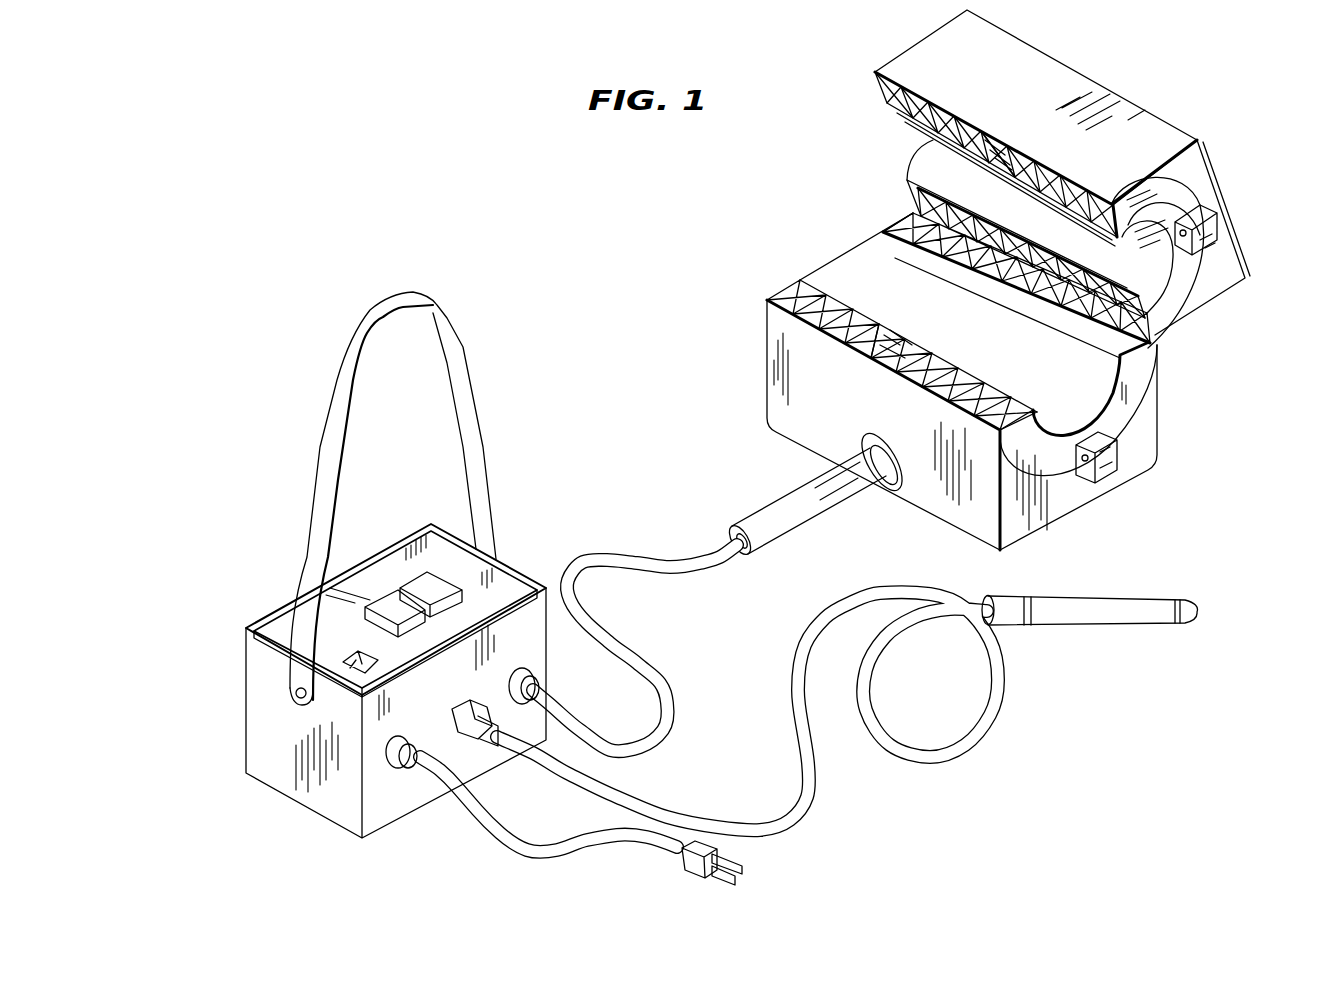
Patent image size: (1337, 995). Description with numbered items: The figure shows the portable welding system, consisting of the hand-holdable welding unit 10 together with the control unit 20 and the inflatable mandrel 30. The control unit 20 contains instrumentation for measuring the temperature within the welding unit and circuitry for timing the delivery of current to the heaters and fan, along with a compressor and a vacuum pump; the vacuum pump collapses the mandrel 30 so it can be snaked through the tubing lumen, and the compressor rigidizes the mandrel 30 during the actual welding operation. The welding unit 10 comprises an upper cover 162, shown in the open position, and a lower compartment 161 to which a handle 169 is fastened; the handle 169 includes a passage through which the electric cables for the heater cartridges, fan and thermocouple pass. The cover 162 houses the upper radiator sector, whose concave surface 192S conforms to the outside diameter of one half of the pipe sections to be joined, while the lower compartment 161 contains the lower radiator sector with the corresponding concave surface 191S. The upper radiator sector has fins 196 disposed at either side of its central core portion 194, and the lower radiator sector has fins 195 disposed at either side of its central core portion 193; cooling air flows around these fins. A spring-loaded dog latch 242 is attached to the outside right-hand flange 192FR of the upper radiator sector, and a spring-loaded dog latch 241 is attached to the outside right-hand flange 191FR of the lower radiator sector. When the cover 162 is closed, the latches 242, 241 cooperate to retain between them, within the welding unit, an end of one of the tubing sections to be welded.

The hand-holdable welding unit 10 is at (1158, 380).
The control unit 20 is at (245, 680).
The inflatable mandrel 30 is at (1103, 623).
The lower compartment 161 is at (768, 352).
The upper cover 162 is at (1100, 83).
The handle 169 is at (777, 513).
The concave surface of lower radiator sector 191S is at (862, 290).
The concave surface of upper radiator sector 192S is at (1215, 295).
The outside right-hand flange of lower radiator sector 191FR is at (1127, 421).
The outside right-hand flange of upper radiator sector 192FR is at (1172, 192).
The central core portion of lower radiator sector 193 is at (878, 350).
The central core portion of upper radiator sector 194 is at (985, 130).
The fins of lower radiator sector 195 is at (875, 283).
The fins of upper radiator sector 196 is at (1040, 165).
The spring-loaded dog latch 241 is at (1107, 477).
The spring-loaded dog latch 242 is at (1212, 230).